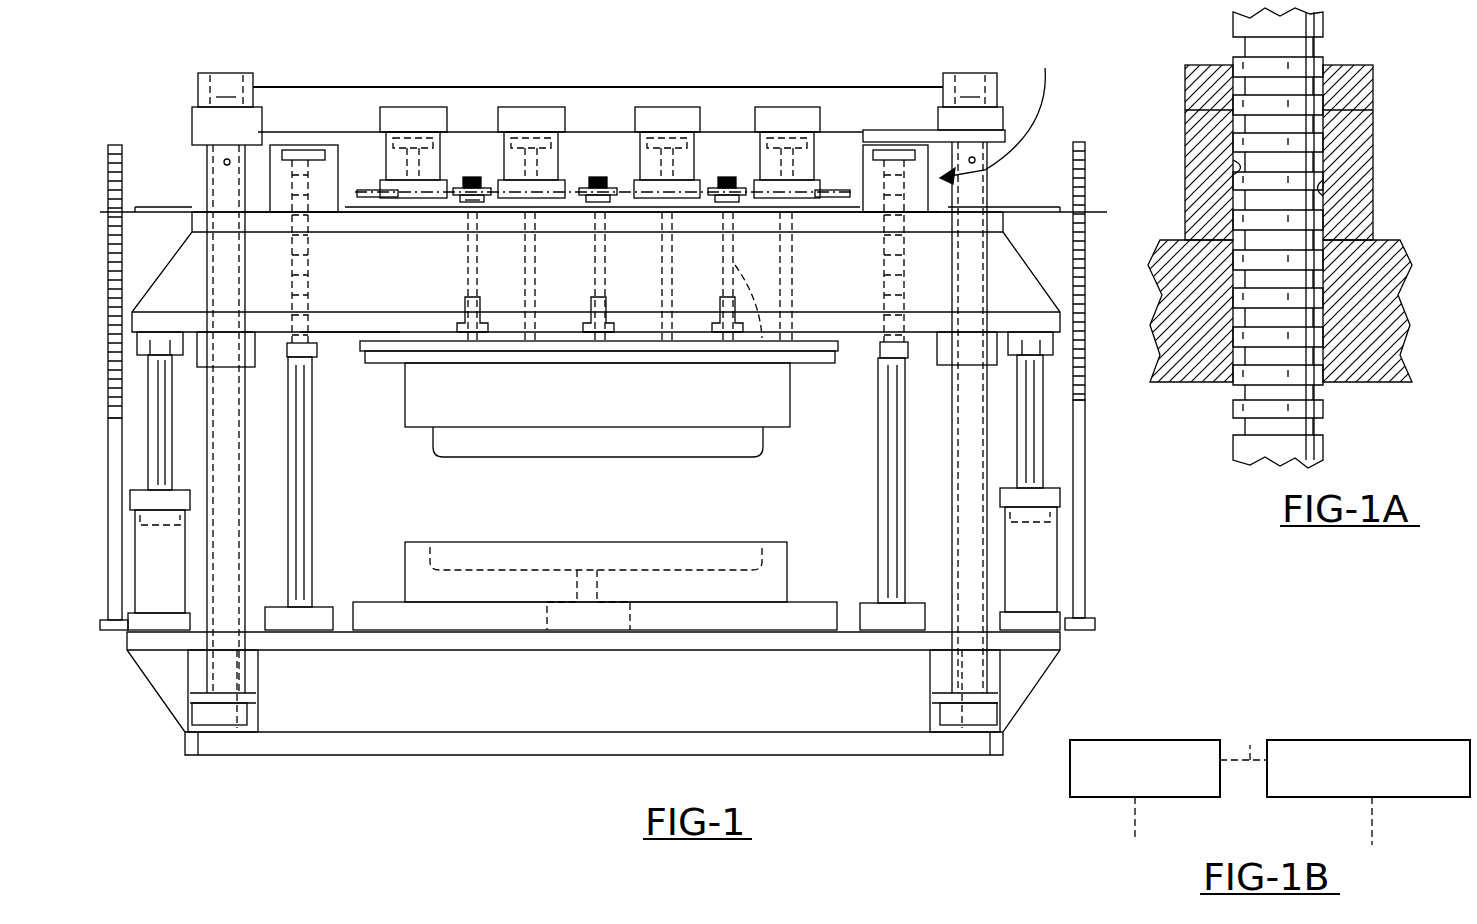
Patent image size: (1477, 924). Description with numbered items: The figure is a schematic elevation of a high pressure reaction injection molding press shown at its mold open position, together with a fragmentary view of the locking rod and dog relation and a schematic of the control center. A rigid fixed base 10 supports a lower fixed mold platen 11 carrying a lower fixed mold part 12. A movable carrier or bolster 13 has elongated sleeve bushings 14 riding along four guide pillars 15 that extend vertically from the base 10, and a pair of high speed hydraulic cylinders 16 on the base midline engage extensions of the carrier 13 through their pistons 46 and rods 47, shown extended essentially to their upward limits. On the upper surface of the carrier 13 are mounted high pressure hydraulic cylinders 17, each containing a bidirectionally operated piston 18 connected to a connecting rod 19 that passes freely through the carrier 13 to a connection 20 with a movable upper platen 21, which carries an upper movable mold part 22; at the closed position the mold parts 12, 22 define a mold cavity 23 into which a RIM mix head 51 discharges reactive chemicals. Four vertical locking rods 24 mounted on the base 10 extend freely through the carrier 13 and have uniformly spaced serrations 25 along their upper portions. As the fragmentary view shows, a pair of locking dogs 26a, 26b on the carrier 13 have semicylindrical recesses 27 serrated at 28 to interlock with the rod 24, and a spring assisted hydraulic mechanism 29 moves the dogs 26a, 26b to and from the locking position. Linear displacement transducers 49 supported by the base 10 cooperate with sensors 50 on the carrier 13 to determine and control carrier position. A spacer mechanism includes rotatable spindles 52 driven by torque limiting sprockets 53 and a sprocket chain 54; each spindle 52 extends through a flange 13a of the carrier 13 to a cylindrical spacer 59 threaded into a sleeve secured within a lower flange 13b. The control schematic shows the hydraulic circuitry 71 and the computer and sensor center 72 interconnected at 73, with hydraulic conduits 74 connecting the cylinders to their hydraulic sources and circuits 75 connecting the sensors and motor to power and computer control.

In FIG. 1, the rigid fixed base 10 is at (628, 701).
In FIG. 1, the lower fixed mold platen 11 is at (812, 612).
In FIG. 1, the lower fixed mold part 12 is at (787, 560).
In FIG. 1, the movable carrier or bolster 13 is at (377, 307).
In FIG. 1A, the movable carrier or bolster 13 is at (1370, 338).
In FIG. 1, the flange of the carrier 13a is at (856, 210).
In FIG. 1, the lower flange of the carrier 13b is at (343, 334).
In FIG. 1, the sleeve bushings 14 is at (255, 345).
In FIG. 1, the guide pillars 15 is at (235, 538).
In FIG. 1, the high speed hydraulic cylinders 16 is at (162, 578).
In FIG. 1, the high pressure hydraulic cylinders 17 is at (380, 117).
In FIG. 1, the piston 18 is at (560, 170).
In FIG. 1, the connecting rod or connector 19 is at (795, 265).
In FIG. 1, the connection 20 is at (420, 338).
In FIG. 1, the movable upper platen 21 is at (525, 372).
In FIG. 1, the upper movable mold part 22 is at (706, 419).
In FIG. 1, the mold cavity 23 is at (760, 557).
In FIG. 1, the locking rods 24 is at (300, 548).
In FIG. 1A, the locking rods 24 is at (1325, 22).
In FIG. 1, the annular grooves or serrations 25 is at (322, 235).
In FIG. 1A, the annular grooves or serrations 25 is at (1315, 50).
In FIG. 1A, the locking dog 26a is at (1345, 140).
In FIG. 1A, the locking dog 26b is at (1210, 165).
In FIG. 1A, the semicylindrical recesses 27 is at (1245, 183).
In FIG. 1A, the serrations 28 is at (1320, 196).
In FIG. 1, the spring assisted hydraulic mechanism 29 is at (1003, 114).
In FIG. 1, the pistons 46 is at (138, 535).
In FIG. 1, the rods 47 is at (160, 457).
In FIG. 1, the linear displacement transducers 49 is at (108, 415).
In FIG. 1, the sensor 50 is at (165, 207).
In FIG. 1A, the sensor 50 is at (1032, 203).
In FIG. 1, the RIM mix head 51 is at (572, 545).
In FIG. 1, the rotatable spindles 52 is at (757, 350).
In FIG. 1, the torque limiting sprockets 53 is at (470, 180).
In FIG. 1, the sprocket chain 54 is at (432, 195).
In FIG. 1, the cylindrical spacer 59 is at (608, 323).
In FIG. 1B, the hydraulic circuitry or system 71 is at (1125, 740).
In FIG. 1B, the computer and sensor center 72 is at (1335, 740).
In FIG. 1B, the interconnection 73 is at (1248, 742).
In FIG. 1B, the hydraulic conduits 74 is at (1140, 812).
In FIG. 1B, the circuits 75 is at (1378, 818).